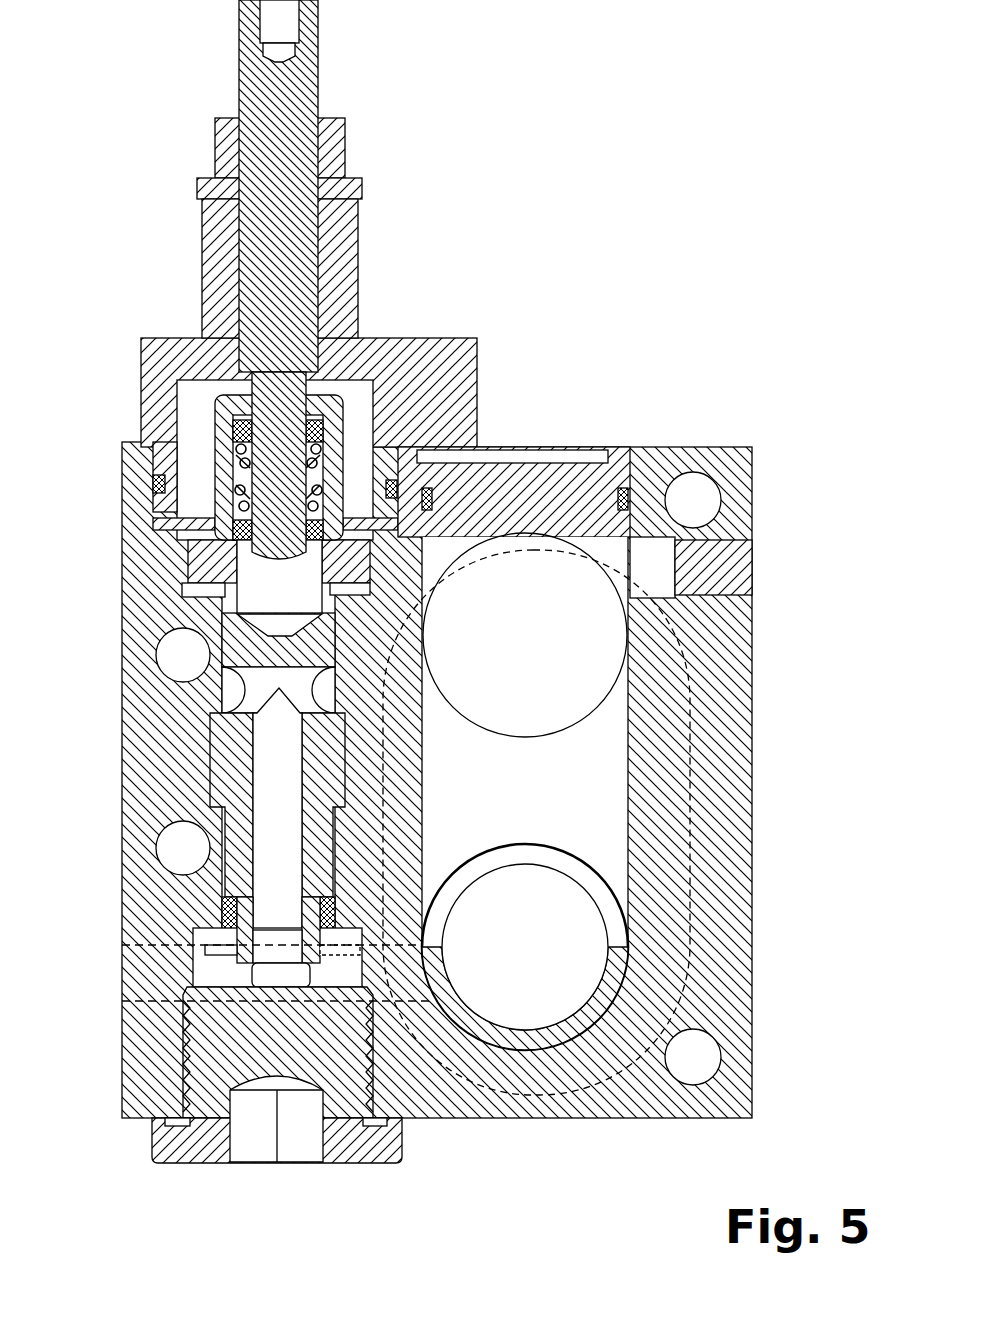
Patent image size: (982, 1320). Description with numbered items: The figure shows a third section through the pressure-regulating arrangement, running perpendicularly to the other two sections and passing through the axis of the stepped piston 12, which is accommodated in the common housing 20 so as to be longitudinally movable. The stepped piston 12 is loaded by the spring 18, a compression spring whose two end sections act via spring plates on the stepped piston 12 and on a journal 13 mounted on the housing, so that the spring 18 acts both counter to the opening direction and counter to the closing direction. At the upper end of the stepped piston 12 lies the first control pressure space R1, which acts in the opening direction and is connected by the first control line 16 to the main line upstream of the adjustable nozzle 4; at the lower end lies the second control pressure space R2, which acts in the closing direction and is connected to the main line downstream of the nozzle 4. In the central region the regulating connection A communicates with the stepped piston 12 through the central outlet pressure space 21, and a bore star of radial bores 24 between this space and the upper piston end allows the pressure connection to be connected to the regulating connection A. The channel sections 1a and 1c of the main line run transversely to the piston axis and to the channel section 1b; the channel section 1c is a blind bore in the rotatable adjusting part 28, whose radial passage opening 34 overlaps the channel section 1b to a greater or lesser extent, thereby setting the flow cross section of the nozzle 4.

The stepped piston 12 is at (222, 763).
The journal 13 is at (290, 369).
The first control line 16 is at (403, 587).
The spring 18 is at (330, 473).
The housing 20 is at (543, 782).
The outlet pressure space 21 is at (205, 737).
The radial bores 24 is at (230, 685).
The adjusting part 28 is at (630, 970).
The passage opening 34 is at (580, 907).
The adjustable nozzle 4 is at (583, 853).
The channel section 1a is at (538, 641).
The channel section 1b is at (538, 810).
The channel section 1c is at (538, 964).
The regulating connection A is at (333, 745).
The first control pressure space R1 is at (195, 586).
The second control pressure space R2 is at (210, 969).